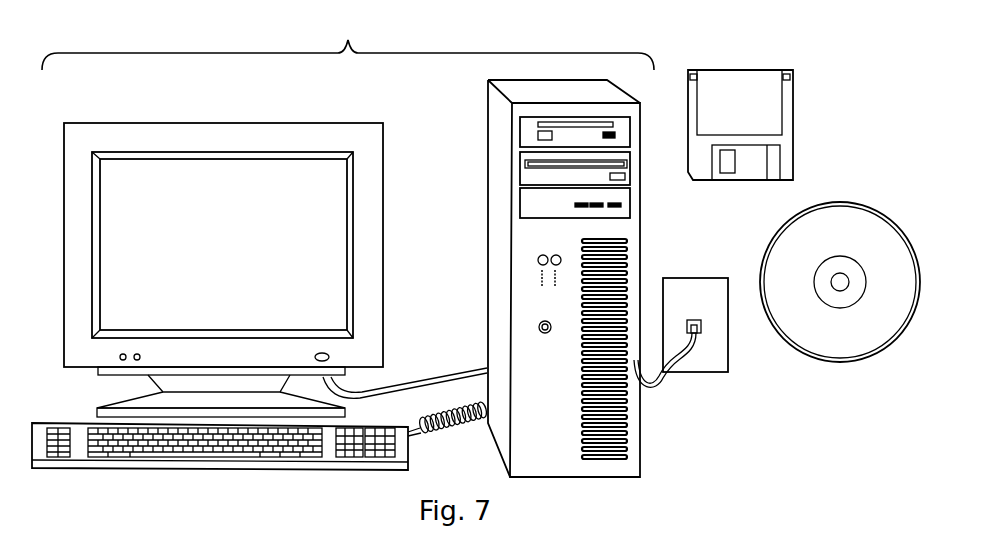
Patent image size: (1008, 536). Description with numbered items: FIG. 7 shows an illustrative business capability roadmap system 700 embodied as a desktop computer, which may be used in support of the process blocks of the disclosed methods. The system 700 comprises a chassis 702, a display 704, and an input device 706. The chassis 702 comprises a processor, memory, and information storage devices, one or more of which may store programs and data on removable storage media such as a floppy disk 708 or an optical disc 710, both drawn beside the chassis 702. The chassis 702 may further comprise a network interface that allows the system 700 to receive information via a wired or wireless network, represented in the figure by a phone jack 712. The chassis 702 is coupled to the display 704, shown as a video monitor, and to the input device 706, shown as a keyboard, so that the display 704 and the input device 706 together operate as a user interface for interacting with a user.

The system 700 is at (348, 36).
The chassis 702 is at (487, 320).
The display 704 is at (83, 372).
The input device 706 is at (78, 470).
The floppy disk 708 is at (796, 148).
The optical disc 710 is at (858, 209).
The phone jack 712 is at (696, 278).